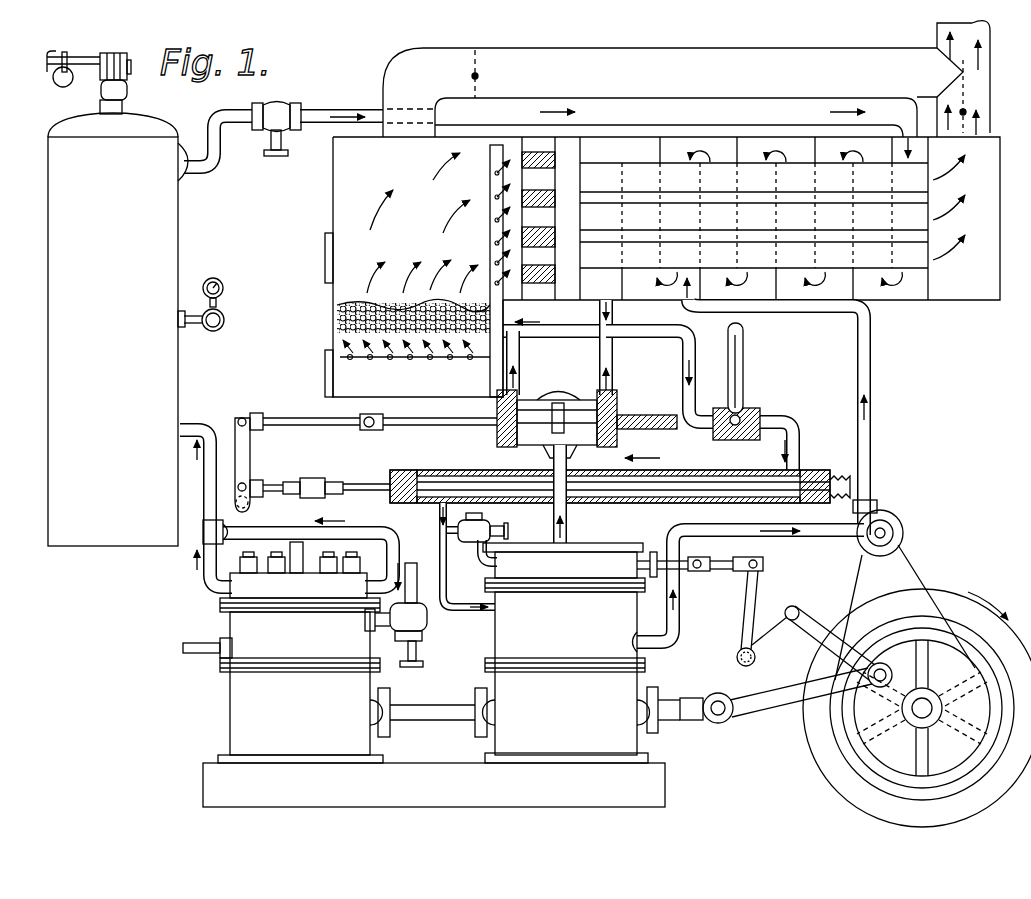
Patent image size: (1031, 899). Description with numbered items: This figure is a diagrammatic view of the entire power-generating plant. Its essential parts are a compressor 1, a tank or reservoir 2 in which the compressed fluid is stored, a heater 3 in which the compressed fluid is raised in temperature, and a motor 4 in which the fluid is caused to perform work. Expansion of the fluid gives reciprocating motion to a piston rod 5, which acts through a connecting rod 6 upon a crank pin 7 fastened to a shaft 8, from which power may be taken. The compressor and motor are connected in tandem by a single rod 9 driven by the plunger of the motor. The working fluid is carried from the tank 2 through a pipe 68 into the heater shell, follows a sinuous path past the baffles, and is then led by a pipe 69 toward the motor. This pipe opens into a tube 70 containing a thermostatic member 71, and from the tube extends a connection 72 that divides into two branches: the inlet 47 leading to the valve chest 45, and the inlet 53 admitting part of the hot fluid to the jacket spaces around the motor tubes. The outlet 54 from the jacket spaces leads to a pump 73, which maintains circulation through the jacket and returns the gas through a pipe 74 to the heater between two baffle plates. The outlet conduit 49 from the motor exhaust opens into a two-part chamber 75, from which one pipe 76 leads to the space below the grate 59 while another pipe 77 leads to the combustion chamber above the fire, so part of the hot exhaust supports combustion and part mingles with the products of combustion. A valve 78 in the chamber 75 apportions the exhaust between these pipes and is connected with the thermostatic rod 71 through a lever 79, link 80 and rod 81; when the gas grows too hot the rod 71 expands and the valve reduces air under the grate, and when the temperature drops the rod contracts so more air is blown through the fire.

The compressor 1 is at (245, 707).
The tank or reservoir 2 is at (112, 298).
The heater 3 is at (838, 255).
The motor 4 is at (566, 670).
The piston rod 5 is at (668, 702).
The connecting rod 6 is at (782, 700).
The crank pin 7 is at (895, 666).
The shaft 8 is at (920, 712).
The single rod 9 is at (438, 712).
The valve chest 45 is at (604, 560).
The inlet 47 is at (500, 542).
The outlet conduit 49 is at (558, 463).
The inlet 53 is at (455, 603).
The outlet 54 is at (681, 617).
The grate 59 is at (338, 325).
The pipe 68 is at (694, 108).
The pipe 69 is at (648, 345).
The tube 70 is at (697, 472).
The thermostatic member 71 is at (590, 492).
The connection 72 is at (440, 512).
The pump 73 is at (886, 522).
The pipe 74 is at (714, 315).
The two-part chamber 75 is at (527, 410).
The pipe 76 is at (437, 357).
The pipe 77 is at (503, 323).
The valve 78 is at (565, 405).
The lever 79 is at (245, 455).
The link 80 is at (283, 418).
The rod 81 is at (414, 418).